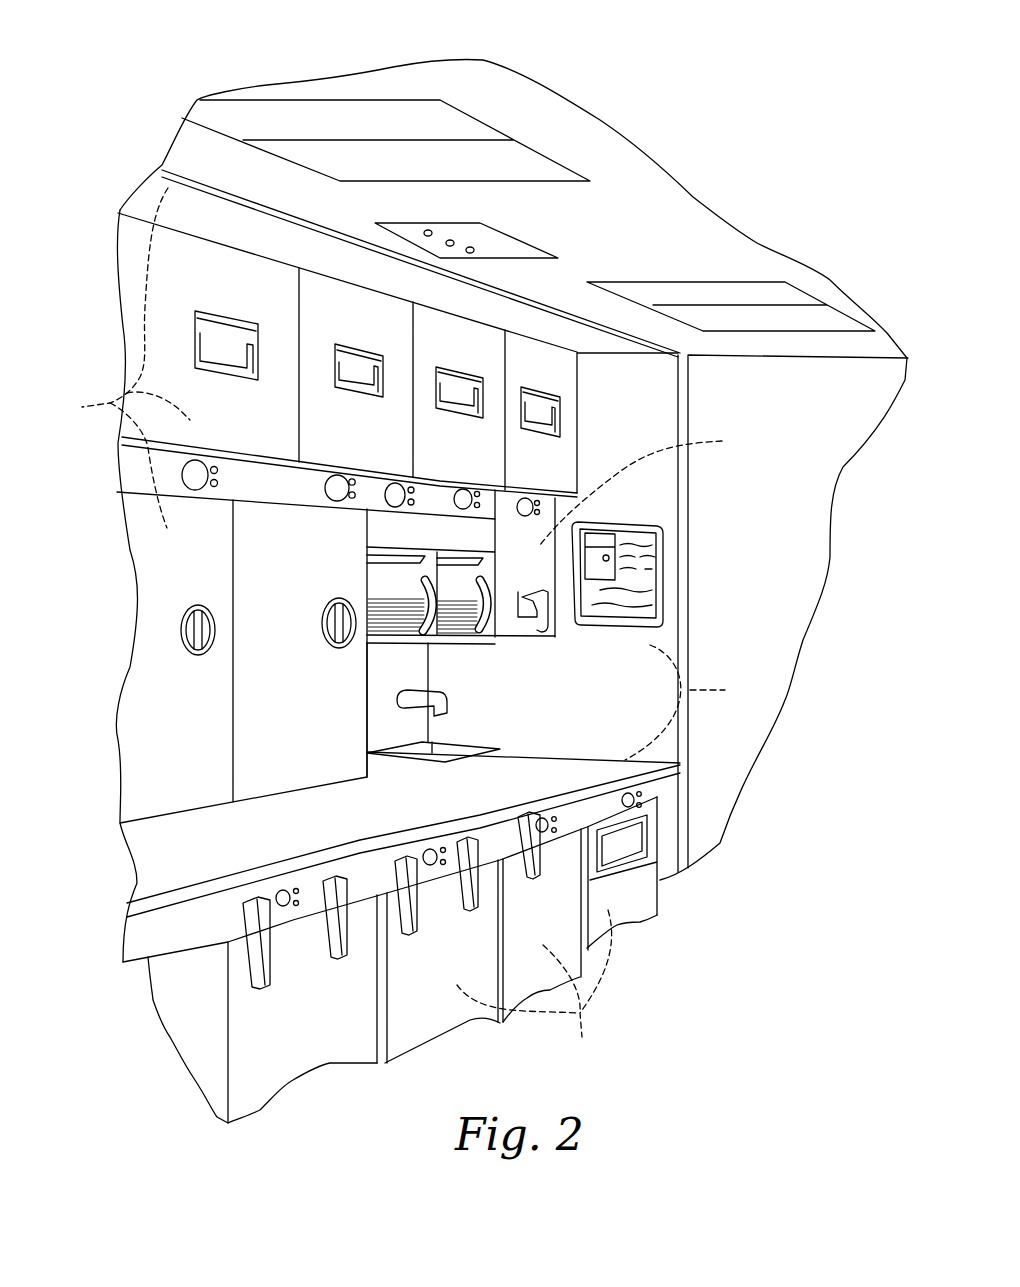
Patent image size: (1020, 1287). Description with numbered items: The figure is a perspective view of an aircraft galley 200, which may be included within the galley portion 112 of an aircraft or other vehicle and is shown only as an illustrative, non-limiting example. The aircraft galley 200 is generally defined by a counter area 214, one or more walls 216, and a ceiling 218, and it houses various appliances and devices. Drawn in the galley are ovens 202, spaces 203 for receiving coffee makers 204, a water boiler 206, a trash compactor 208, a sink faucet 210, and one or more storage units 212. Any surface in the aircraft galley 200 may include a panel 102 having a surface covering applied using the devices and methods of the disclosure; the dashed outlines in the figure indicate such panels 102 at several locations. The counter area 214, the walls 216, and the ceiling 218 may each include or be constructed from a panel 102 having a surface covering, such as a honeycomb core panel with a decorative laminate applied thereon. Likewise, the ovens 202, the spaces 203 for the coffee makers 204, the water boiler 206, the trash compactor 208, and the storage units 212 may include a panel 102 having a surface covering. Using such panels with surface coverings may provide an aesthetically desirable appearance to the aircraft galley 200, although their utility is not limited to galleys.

The galley portion 112 is at (740, 58).
The aircraft galley 200 is at (715, 131).
The ceiling 218 is at (607, 247).
The storage units 212 is at (560, 372).
The panel 102 is at (404, 625).
The walls 216 is at (658, 495).
The ovens 202 is at (157, 720).
The spaces for receiving coffee makers 203 is at (418, 541).
The coffee makers 204 is at (457, 623).
The water boiler 206 is at (553, 627).
The sink faucet 210 is at (448, 712).
The counter area 214 is at (190, 857).
The trash compactor 208 is at (648, 898).